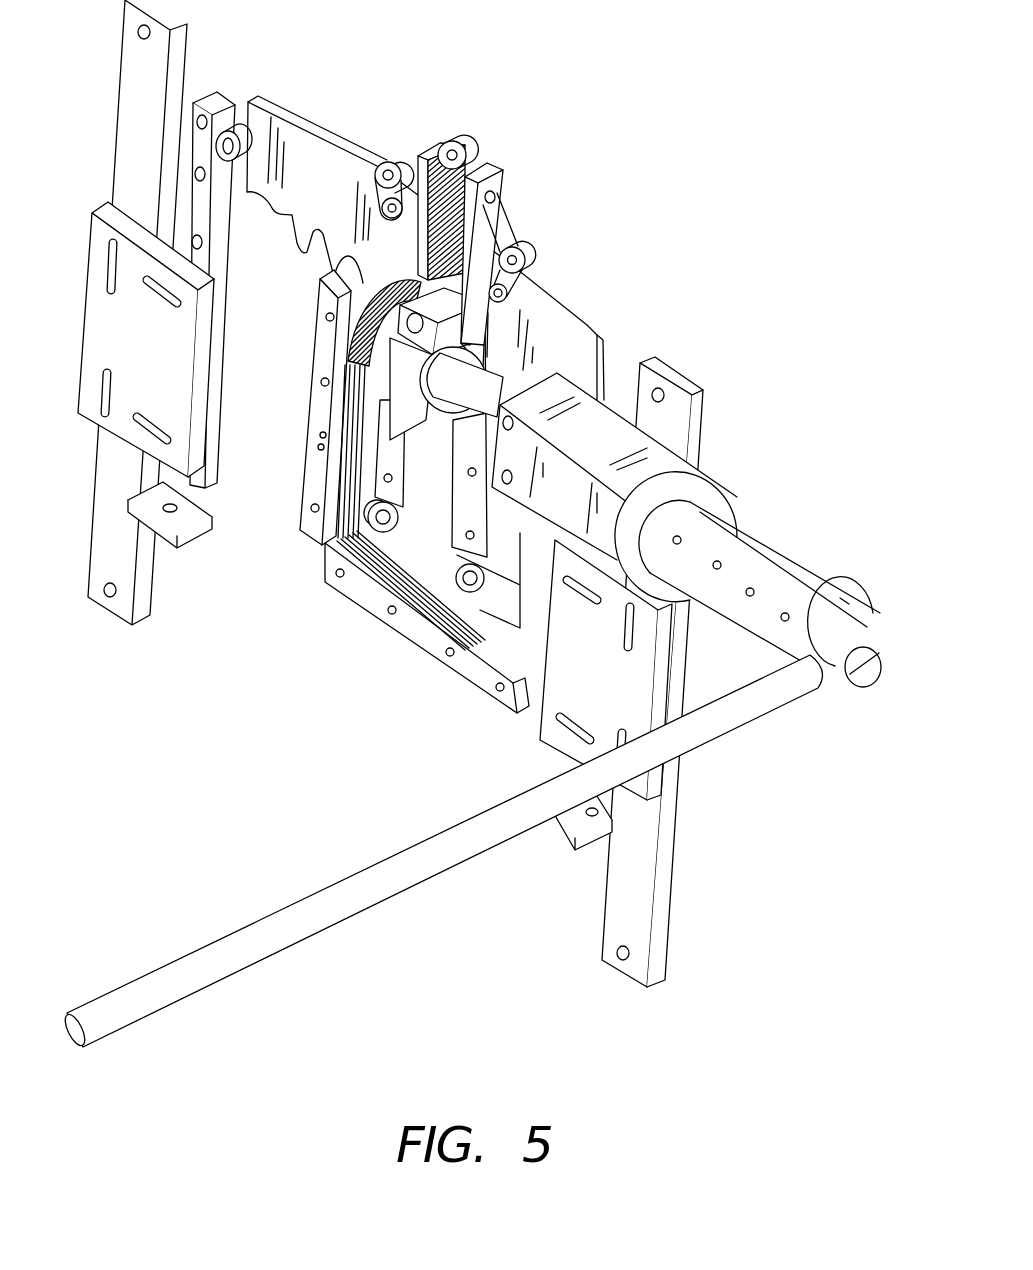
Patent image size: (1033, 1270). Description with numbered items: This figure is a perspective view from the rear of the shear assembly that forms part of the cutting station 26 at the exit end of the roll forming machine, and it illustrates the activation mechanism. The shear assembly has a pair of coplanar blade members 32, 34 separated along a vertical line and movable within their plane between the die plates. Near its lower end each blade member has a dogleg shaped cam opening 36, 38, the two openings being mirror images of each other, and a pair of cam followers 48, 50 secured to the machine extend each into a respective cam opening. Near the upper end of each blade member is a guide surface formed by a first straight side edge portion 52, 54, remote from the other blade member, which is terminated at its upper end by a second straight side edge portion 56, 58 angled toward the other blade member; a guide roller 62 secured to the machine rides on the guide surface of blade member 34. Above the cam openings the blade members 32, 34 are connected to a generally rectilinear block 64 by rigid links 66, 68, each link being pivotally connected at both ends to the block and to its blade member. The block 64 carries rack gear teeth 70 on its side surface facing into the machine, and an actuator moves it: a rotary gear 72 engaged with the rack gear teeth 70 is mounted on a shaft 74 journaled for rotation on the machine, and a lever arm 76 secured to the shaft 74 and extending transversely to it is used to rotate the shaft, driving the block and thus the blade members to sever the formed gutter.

The cutting station 26 is at (473, 524).
The blade member 32 is at (578, 338).
The blade member 34 is at (312, 150).
The cam opening 36 is at (476, 592).
The cam opening 38 is at (442, 458).
The cam follower 48 is at (440, 640).
The cam follower 50 is at (378, 562).
The first straight side edge portion 52 is at (630, 377).
The first straight side edge portion 54 is at (246, 103).
The second straight side edge portion 56 is at (603, 330).
The second straight side edge portion 58 is at (258, 100).
The guide roller 62 is at (222, 160).
The block 64 is at (488, 165).
The rigid link 66 is at (507, 222).
The rigid link 68 is at (405, 215).
The rack gear teeth 70 is at (426, 154).
The rotary gear 72 is at (350, 345).
The shaft 74 is at (493, 388).
The lever arm 76 is at (337, 917).